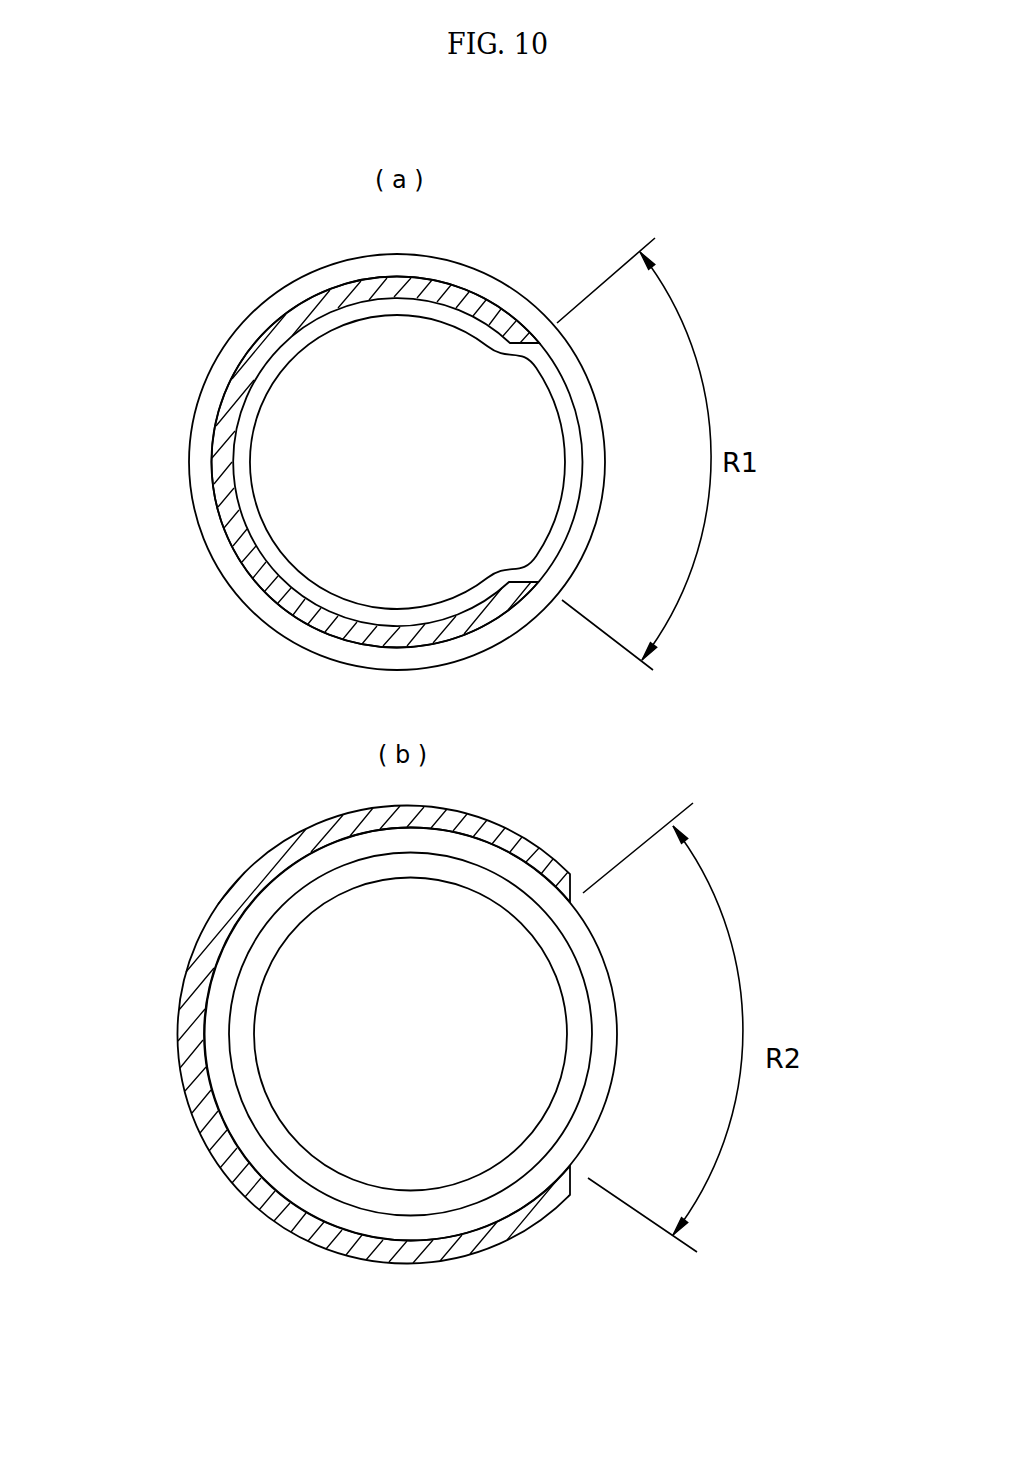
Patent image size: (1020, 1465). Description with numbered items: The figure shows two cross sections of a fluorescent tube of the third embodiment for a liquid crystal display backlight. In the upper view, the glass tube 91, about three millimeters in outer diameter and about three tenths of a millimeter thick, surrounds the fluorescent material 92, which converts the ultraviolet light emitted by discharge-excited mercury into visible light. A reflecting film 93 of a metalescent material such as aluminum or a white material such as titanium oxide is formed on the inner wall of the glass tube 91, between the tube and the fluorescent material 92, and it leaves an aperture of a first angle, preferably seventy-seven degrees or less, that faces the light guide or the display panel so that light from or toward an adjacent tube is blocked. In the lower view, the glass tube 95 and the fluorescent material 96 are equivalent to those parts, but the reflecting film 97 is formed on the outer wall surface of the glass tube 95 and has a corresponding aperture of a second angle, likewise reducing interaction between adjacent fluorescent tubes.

The glass tube 91 is at (218, 352).
The fluorescent material 92 is at (252, 459).
The reflecting film 93 is at (205, 437).
The glass tube 95 is at (606, 1112).
The fluorescent material 96 is at (490, 1170).
The reflecting film 97 is at (495, 1245).